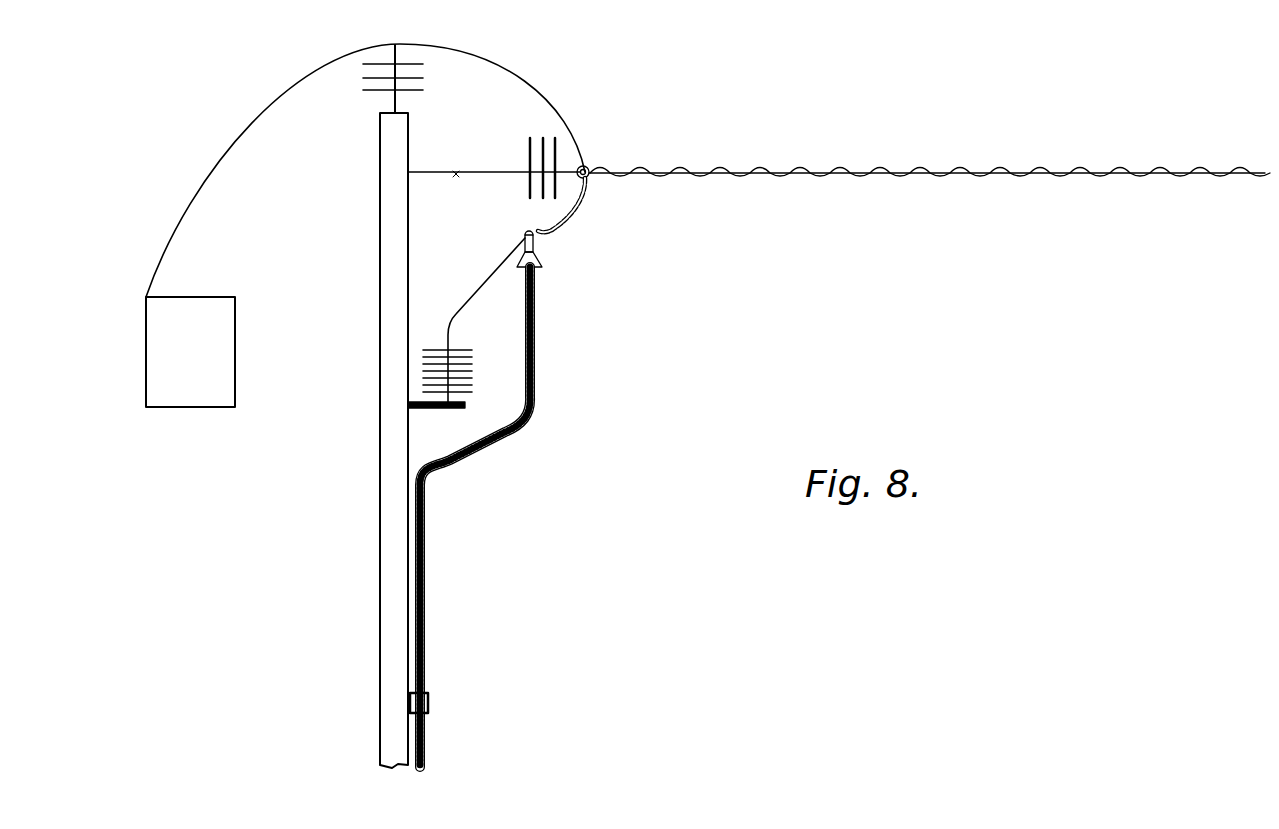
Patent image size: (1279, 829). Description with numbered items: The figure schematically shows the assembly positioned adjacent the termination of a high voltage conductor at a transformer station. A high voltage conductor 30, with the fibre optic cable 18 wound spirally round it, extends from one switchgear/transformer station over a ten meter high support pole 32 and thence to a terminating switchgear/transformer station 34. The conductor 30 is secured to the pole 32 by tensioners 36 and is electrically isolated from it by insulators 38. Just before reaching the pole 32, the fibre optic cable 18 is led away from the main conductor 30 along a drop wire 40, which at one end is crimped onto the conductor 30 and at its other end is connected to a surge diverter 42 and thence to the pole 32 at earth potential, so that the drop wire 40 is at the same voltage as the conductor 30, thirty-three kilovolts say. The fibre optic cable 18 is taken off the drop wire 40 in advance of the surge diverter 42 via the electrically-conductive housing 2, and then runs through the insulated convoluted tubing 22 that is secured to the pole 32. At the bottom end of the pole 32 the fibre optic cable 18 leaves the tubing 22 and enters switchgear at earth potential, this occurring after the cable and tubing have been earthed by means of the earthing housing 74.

The electrically-conductive housing 2 is at (543, 252).
The fibre optic cable 18 is at (993, 177).
The insulated convoluted tubing 22 is at (536, 406).
The high voltage conductor 30 is at (1097, 177).
The support pole 32 is at (397, 570).
The terminating switchgear/transformer station 34 is at (210, 364).
The tensioners 36 is at (430, 174).
The insulators 38 is at (527, 148).
The drop wire 40 is at (492, 272).
The surge diverter 42 is at (430, 364).
The earthing housing 74 is at (428, 703).